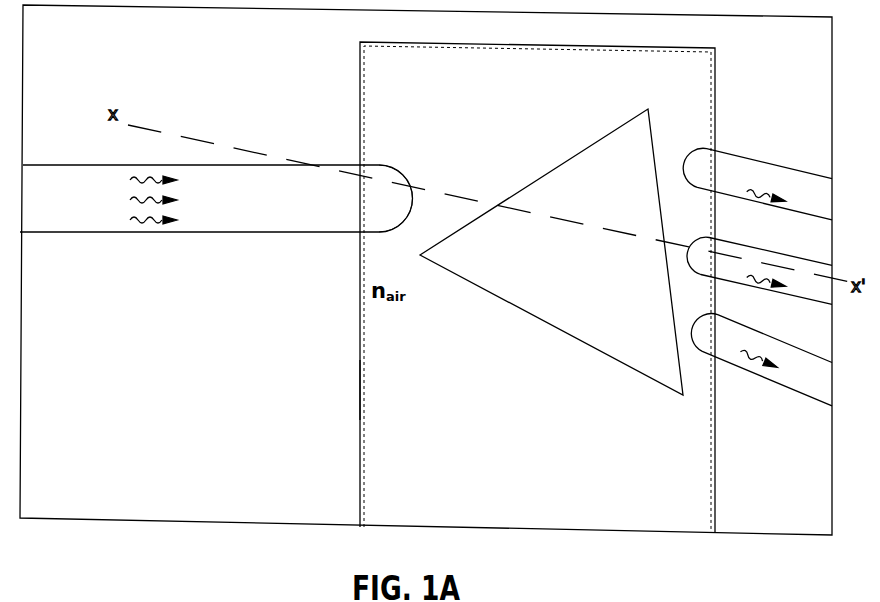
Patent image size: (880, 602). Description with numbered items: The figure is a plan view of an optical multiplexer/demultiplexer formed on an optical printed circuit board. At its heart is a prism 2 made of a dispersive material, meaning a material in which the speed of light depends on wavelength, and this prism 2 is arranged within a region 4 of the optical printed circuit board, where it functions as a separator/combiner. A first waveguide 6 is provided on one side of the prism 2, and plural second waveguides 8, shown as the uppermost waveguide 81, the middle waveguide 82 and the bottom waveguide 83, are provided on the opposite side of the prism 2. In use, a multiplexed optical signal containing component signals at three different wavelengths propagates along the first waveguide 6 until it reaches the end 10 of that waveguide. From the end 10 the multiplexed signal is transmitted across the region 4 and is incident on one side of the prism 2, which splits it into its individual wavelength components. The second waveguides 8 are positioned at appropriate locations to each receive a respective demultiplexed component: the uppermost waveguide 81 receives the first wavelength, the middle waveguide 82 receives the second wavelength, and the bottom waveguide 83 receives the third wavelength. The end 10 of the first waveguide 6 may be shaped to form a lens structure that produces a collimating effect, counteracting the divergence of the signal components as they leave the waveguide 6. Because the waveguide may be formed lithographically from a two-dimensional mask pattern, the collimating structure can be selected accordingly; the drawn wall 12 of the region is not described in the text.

The prism 2 is at (556, 168).
The region 4 is at (550, 413).
The first waveguide 6 is at (288, 165).
The second waveguides 8 is at (752, 255).
The uppermost second waveguide 81 is at (707, 163).
The middle second waveguide 82 is at (704, 249).
The bottom second waveguide 83 is at (705, 320).
The end of the first waveguide 10 is at (388, 169).
The housing wall 12 is at (364, 392).